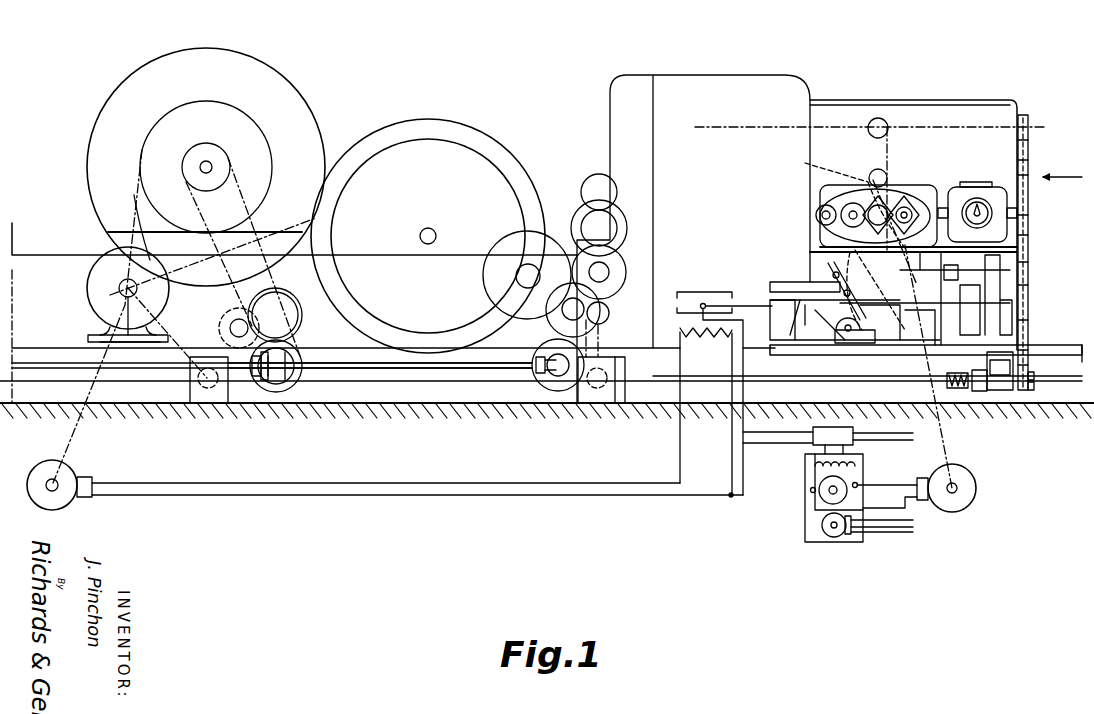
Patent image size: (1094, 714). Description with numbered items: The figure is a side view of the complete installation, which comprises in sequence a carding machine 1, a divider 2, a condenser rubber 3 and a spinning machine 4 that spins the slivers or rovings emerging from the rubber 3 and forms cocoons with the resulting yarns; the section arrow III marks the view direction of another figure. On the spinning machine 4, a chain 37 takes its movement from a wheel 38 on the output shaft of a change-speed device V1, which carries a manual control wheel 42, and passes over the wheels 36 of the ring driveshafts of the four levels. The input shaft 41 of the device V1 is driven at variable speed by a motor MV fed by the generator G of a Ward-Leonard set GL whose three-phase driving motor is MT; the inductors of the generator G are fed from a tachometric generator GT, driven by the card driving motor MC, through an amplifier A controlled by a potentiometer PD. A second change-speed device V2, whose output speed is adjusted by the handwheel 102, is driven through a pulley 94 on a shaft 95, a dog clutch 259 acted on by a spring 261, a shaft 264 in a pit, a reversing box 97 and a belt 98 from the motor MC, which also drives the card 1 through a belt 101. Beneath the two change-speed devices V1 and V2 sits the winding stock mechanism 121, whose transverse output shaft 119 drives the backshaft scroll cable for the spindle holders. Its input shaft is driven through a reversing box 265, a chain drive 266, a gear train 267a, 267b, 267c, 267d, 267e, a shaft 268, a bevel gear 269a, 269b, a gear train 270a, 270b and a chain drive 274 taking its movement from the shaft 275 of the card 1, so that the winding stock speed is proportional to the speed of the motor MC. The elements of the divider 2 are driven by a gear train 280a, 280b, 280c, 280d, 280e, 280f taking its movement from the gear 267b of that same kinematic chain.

The carding machine 1 is at (339, 126).
The divider 2 is at (575, 180).
The condenser rubber 3 is at (738, 178).
The spinning machine for the production of cocoons 4 is at (889, 96).
The wheel of the driveshaft of the rings 36 is at (876, 168).
The chain 37 is at (850, 155).
The wheel or pulley 38 is at (843, 201).
The input shaft of the speed varying device 41 is at (946, 433).
The manual control wheel 42 is at (822, 232).
The pulley 94 is at (1030, 376).
The shaft 95 is at (1030, 386).
The reversing box 97 is at (190, 392).
The belt 98 is at (142, 320).
The belt 101 is at (134, 196).
The handwheel 102 is at (1030, 221).
The transverse output shaft 119 is at (851, 342).
The winding stock mechanism 121 is at (768, 316).
The dog clutch 259 is at (986, 393).
The spring 261 is at (955, 390).
The shaft 264 is at (890, 366).
The reversing box 265 is at (608, 405).
The chain drive 266 is at (614, 332).
The gear of gear train 267a is at (609, 307).
The gear of gear train 267b is at (549, 316).
The gear of gear train 267c is at (610, 318).
The gear of gear train 267d is at (544, 384).
The gear of gear train 267e is at (568, 380).
The shaft 268 is at (417, 369).
The bevel gear 269a is at (288, 382).
The bevel gear 269b is at (266, 380).
The gear of gear train 270a is at (298, 356).
The gear of gear train 270b is at (297, 320).
The chain drive 274 is at (222, 256).
The shaft of the card 275 is at (211, 163).
The gear of gear train 280a is at (507, 240).
The gear of gear train 280b is at (619, 284).
The gear of gear train 280c is at (623, 260).
The gear of gear train 280d is at (624, 233).
The gear of gear train 280e is at (621, 213).
The gear of gear train 280f is at (599, 174).
The card driving motor MC is at (90, 290).
The potentiometer PD is at (697, 326).
The tachometric generator GT is at (33, 479).
The motor MV is at (976, 492).
The amplifier A is at (822, 441).
The generator G is at (818, 493).
The Ward-Leonard set GL is at (805, 515).
The three-phase driving motor MT is at (821, 527).
The change-speed device V1 is at (924, 200).
The change-speed device V2 is at (968, 192).
The section view arrow III is at (1062, 167).